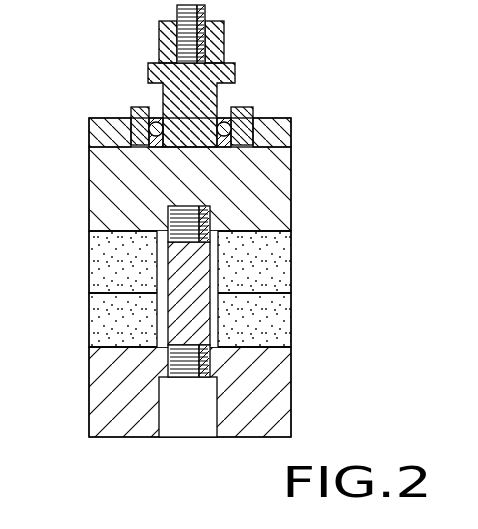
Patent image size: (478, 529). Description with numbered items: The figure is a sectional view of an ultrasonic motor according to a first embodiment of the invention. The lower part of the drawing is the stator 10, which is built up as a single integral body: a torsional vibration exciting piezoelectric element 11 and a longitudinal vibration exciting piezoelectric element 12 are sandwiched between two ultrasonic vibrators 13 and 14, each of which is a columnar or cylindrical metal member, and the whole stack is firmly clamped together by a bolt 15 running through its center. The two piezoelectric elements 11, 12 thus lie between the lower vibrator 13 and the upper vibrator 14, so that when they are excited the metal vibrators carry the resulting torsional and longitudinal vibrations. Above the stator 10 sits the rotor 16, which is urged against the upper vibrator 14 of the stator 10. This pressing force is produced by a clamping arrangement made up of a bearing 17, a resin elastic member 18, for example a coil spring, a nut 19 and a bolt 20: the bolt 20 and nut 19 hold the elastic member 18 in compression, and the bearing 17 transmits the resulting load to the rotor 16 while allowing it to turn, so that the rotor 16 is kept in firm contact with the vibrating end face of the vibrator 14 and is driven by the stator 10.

The stator 10 is at (63, 150).
The torsional vibration exciting piezoelectric element 11 is at (278, 300).
The longitudinal vibration exciting piezoelectric element 12 is at (278, 244).
The ultrasonic vibrator 13 is at (278, 390).
The ultrasonic vibrator 14 is at (275, 163).
The bolt 15 is at (195, 316).
The rotor 16 is at (278, 128).
The bearing 17 is at (242, 107).
The resin elastic member 18 is at (150, 73).
The nut 19 is at (170, 43).
The bolt 20 is at (205, 13).